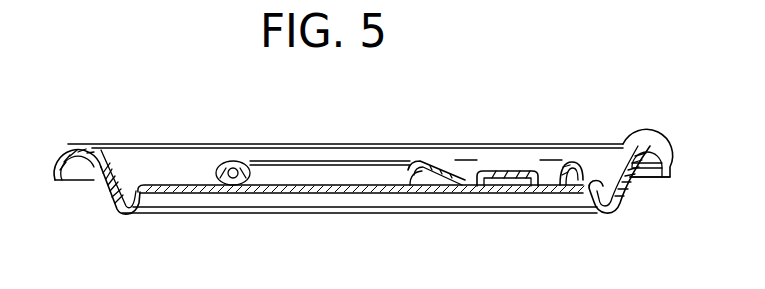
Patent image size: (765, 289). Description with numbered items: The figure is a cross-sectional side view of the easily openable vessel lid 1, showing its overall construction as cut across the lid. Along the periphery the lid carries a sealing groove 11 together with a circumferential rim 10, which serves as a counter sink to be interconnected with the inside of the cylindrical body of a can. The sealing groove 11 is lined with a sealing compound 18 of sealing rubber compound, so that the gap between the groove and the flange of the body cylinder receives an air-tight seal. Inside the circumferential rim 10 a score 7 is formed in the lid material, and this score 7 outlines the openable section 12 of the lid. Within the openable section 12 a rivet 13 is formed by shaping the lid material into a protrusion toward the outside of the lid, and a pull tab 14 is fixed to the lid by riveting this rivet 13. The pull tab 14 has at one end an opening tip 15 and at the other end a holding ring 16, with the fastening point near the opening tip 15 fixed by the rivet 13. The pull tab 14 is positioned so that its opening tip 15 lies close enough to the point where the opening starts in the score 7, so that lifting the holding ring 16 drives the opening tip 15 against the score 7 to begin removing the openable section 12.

The tray assembly 1 is at (641, 136).
The score 7 is at (143, 186).
The circumferential rim 10 is at (628, 144).
The sealing groove 11 is at (641, 184).
The openable section 12 is at (193, 185).
The rivet 13 is at (504, 171).
The pull tab 14 is at (418, 162).
The opening tip 15 is at (579, 161).
The holding ring 16 is at (234, 161).
The sealing compound 18 is at (83, 168).